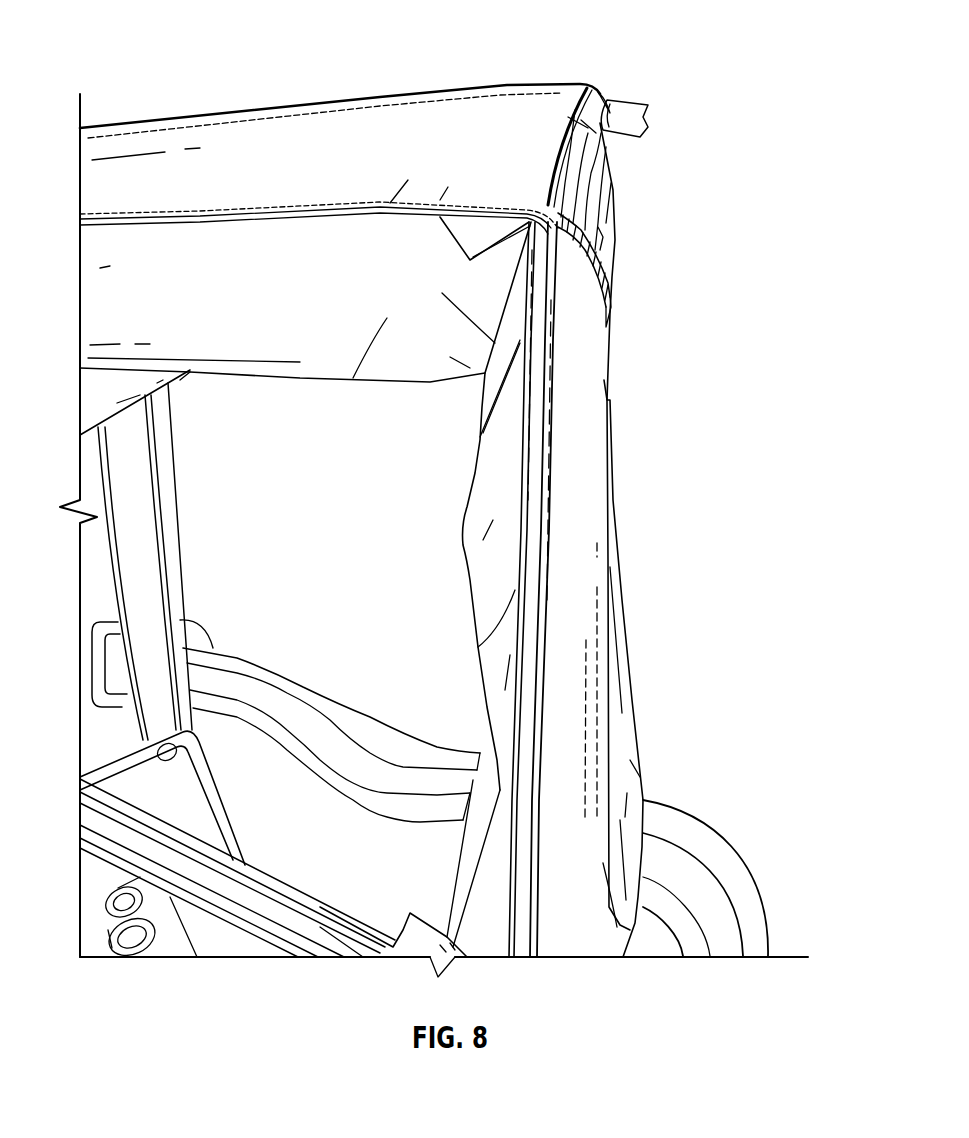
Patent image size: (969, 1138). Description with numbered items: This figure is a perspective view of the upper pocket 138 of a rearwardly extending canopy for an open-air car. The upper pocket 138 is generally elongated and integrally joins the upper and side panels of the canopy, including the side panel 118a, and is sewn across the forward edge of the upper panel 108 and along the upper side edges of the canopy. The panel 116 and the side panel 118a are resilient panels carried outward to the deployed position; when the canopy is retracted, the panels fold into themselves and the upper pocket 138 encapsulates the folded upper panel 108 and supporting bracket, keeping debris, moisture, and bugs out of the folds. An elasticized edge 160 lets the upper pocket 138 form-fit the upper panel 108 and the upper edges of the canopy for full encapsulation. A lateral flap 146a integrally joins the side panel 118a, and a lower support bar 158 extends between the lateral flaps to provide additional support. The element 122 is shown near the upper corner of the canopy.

The upper panel 108 is at (497, 233).
The panel 116 is at (322, 307).
The side panel 118a is at (603, 503).
The clip 122 is at (635, 112).
The upper pocket 138 is at (613, 190).
The lateral flap 146a is at (503, 925).
The lower support bar 158 is at (283, 917).
The elasticized edge 160 is at (607, 260).